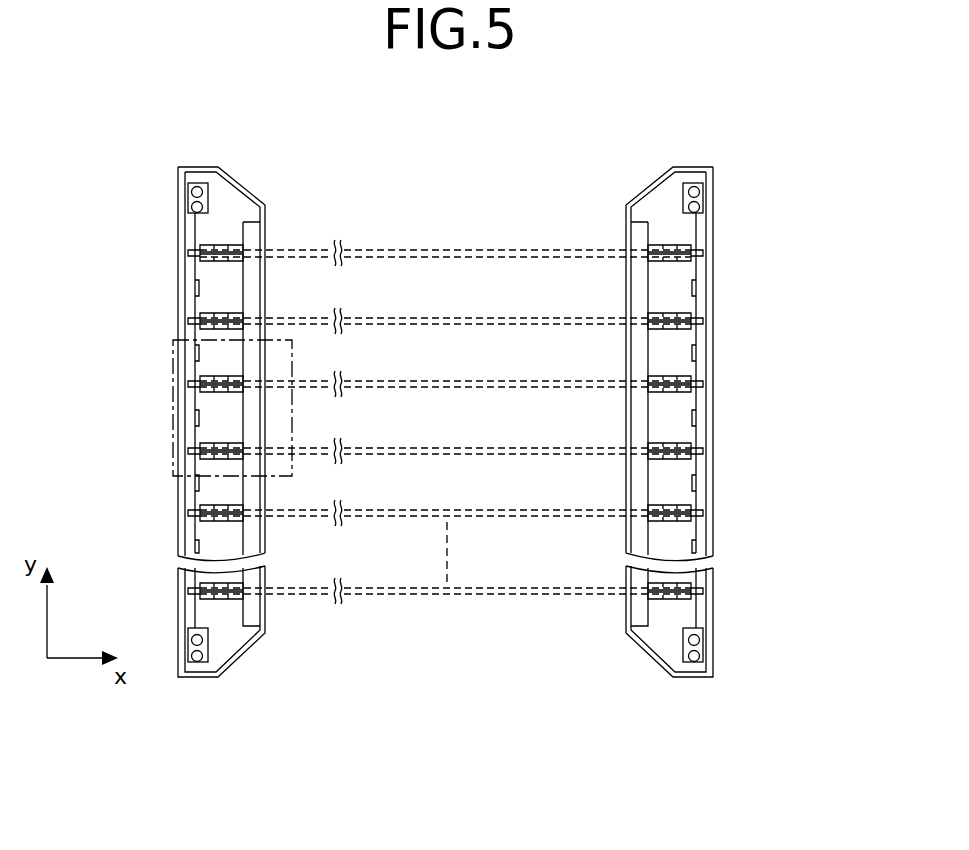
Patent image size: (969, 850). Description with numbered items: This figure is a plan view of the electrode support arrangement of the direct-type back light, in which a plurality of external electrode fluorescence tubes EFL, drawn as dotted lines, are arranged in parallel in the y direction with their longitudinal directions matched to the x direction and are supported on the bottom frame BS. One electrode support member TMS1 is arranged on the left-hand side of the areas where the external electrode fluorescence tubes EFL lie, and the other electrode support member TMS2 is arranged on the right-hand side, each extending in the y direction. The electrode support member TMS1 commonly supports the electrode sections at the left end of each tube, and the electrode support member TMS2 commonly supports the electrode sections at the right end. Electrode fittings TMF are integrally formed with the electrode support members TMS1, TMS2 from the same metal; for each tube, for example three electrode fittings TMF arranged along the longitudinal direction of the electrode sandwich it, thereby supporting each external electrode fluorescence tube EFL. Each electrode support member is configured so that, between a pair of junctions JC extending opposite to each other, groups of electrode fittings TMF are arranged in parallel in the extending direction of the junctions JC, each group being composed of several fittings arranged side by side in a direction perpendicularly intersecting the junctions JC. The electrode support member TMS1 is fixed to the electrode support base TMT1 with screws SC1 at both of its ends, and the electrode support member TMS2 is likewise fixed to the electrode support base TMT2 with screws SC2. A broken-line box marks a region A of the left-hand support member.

The electrode support base TMT1 is at (225, 634).
The electrode support base TMT2 is at (660, 636).
The electrode support member TMS1 is at (193, 399).
The electrode support member TMS2 is at (720, 432).
The screws SC1 is at (192, 207).
The screws SC2 is at (699, 206).
The electrode fittings TMF is at (192, 246).
The junctions JC is at (193, 436).
The external electrode fluorescence tubes EFL is at (430, 318).
The bottom frame BS is at (387, 625).
The region A is at (244, 408).